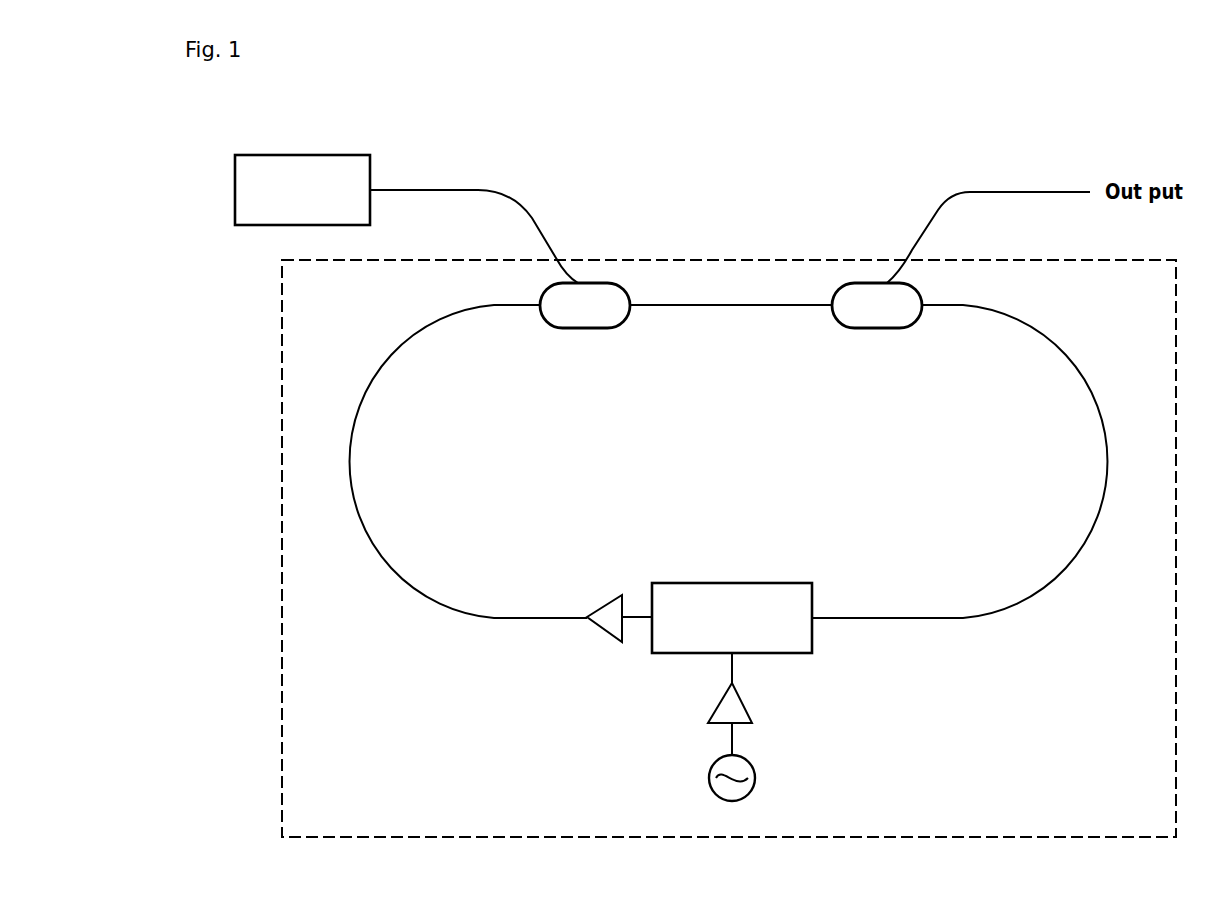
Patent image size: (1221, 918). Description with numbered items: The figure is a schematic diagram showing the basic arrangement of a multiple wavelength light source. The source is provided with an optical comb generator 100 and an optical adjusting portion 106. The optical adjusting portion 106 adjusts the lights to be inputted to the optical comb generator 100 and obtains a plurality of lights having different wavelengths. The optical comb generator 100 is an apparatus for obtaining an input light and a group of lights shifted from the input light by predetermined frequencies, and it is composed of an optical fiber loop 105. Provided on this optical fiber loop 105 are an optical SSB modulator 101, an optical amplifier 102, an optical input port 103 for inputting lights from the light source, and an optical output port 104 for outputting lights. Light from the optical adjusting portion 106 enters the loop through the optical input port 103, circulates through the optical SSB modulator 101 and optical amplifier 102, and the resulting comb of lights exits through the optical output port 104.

The optical comb generator 100 is at (751, 258).
The optical SSB modulator 101 is at (755, 583).
The optical amplifier 102 is at (607, 603).
The optical input port 103 is at (583, 328).
The optical output port 104 is at (873, 328).
The optical fiber loop 105 is at (930, 620).
The optical adjusting portion 106 is at (304, 155).